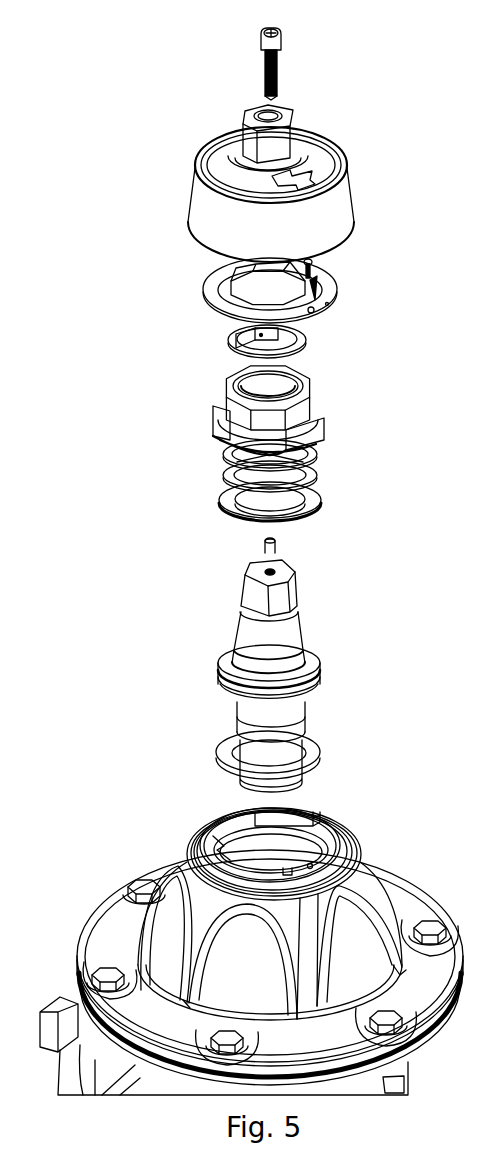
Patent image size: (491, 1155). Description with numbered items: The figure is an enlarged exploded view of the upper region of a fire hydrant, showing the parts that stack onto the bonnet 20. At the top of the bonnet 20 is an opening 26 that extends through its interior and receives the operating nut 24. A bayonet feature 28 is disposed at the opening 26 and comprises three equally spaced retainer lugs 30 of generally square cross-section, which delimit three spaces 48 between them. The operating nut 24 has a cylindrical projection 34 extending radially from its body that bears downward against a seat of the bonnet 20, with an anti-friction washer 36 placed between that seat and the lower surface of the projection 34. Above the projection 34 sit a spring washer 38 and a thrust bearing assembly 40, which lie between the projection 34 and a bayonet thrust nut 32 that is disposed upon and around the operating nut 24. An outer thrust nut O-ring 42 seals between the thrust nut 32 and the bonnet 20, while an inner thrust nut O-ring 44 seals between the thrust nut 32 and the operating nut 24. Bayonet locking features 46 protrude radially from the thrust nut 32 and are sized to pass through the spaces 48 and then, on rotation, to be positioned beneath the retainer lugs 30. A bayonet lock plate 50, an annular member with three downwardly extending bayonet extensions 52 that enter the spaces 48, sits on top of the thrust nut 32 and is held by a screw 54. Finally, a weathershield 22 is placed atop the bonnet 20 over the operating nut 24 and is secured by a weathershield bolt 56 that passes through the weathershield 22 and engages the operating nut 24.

The bonnet 20 is at (115, 942).
The weathershield 22 is at (197, 195).
The operating nut 24 is at (306, 610).
The opening 26 is at (263, 860).
The bayonet feature 28 is at (348, 832).
The retainer lugs 30 is at (278, 810).
The bayonet thrust nut 32 is at (327, 392).
The cylindrical projection 34 is at (321, 672).
The anti-friction washer 36 is at (324, 742).
The spring washer 38 is at (225, 480).
The thrust bearing assembly 40 is at (217, 503).
The outer thrust nut O-ring 42 is at (223, 452).
The inner thrust nut O-ring 44 is at (235, 345).
The bayonet locking features 46 is at (320, 433).
The spaces 48 is at (238, 823).
The bayonet lock plate 50 is at (341, 293).
The bayonet extensions 52 is at (307, 328).
The screw 54 is at (323, 258).
The weathershield bolt 56 is at (259, 43).